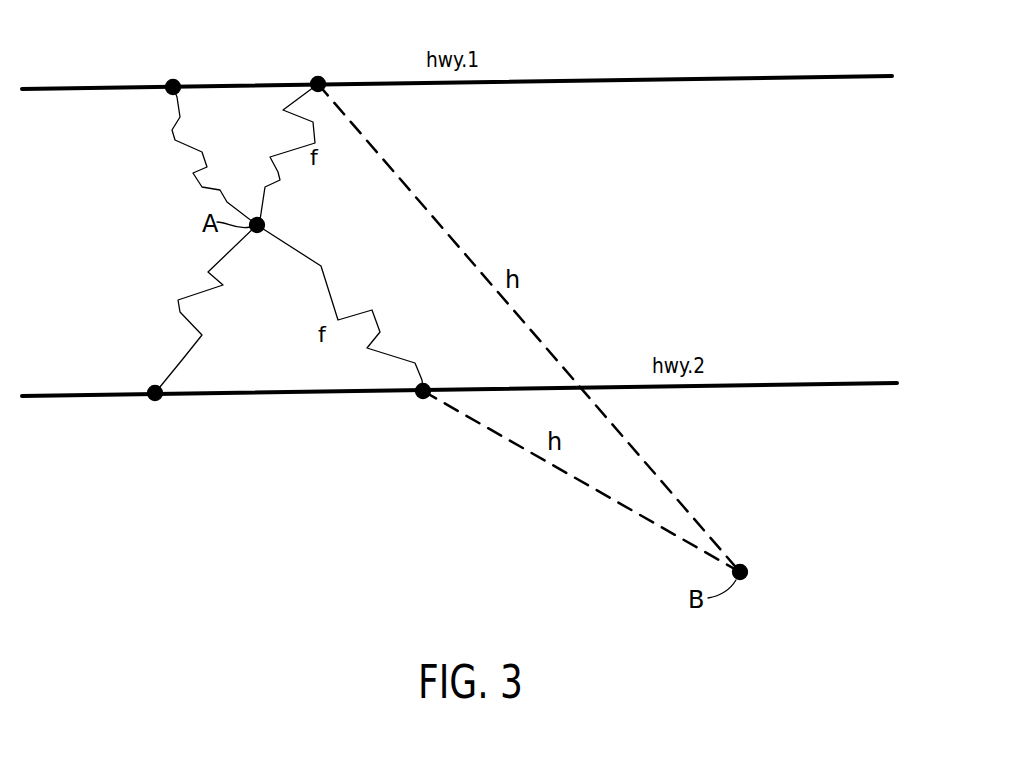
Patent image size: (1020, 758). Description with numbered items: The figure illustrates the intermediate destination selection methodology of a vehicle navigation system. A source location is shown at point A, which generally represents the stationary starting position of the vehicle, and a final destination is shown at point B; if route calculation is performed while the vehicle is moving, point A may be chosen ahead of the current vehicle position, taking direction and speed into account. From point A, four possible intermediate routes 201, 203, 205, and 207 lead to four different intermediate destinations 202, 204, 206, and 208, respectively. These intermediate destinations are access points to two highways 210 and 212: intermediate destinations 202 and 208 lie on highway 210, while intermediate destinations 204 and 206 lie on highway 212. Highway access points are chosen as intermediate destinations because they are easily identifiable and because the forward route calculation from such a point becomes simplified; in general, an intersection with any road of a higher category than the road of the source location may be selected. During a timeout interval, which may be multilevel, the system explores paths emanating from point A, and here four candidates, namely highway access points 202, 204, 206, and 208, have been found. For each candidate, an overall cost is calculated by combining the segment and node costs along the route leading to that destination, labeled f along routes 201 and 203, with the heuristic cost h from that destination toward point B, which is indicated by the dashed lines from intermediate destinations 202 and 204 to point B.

The intermediate route 201 is at (270, 156).
The intermediate destination 202 is at (316, 82).
The intermediate route 203 is at (323, 292).
The intermediate destination 204 is at (422, 401).
The intermediate route 205 is at (178, 307).
The intermediate destination 206 is at (155, 401).
The intermediate route 207 is at (193, 173).
The intermediate destination 208 is at (172, 84).
The highway 210 is at (713, 76).
The highway 212 is at (768, 386).